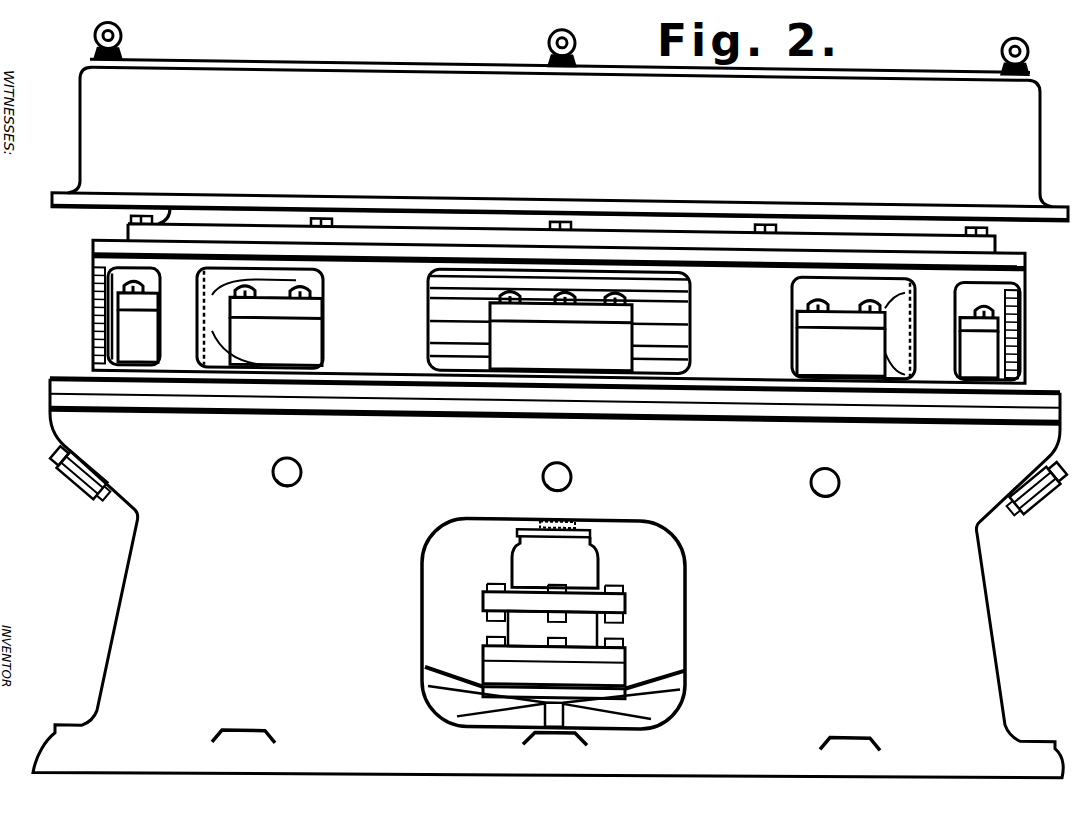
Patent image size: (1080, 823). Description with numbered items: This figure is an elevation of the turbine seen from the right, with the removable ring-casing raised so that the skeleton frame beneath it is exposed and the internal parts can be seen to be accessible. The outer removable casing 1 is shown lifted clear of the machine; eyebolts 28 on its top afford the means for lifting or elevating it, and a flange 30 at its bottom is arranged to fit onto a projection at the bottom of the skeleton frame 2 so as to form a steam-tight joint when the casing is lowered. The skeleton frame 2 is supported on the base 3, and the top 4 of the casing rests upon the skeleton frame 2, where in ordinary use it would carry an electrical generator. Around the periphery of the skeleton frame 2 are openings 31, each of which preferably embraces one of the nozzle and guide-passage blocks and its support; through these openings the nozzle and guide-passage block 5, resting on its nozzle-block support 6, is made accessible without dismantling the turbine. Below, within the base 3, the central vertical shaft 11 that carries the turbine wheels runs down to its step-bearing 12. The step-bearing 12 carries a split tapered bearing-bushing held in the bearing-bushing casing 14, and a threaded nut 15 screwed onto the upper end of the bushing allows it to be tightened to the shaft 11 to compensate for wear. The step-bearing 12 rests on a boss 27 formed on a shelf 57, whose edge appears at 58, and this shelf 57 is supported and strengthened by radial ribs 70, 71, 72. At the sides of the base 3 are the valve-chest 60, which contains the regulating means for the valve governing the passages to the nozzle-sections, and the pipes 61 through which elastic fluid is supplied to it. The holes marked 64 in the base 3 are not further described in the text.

The removable casing 1 is at (95, 127).
The skeleton frame 2 is at (93, 261).
The base 3 is at (125, 570).
The top of the casing 4 is at (125, 229).
The nozzle and guide-passage block 5 is at (127, 299).
The nozzle-block support 6 is at (140, 343).
The central vertical shaft 11 is at (572, 517).
The step-bearing 12 is at (625, 609).
The bearing-bushing casing 14 is at (600, 553).
The threaded nut 15 is at (590, 526).
The boss 27 is at (618, 660).
The eyebolts 28 is at (122, 33).
The flange 30 is at (52, 199).
The openings 31 is at (105, 305).
The shelf 57 is at (557, 688).
The edge of the shelf 58 is at (428, 664).
The valve-chest 60 is at (66, 484).
The pipes 61 is at (50, 460).
The bolt hole 64 is at (276, 477).
The radial rib 70 is at (452, 710).
The radial rib 71 is at (430, 688).
The radial rib 72 is at (575, 714).